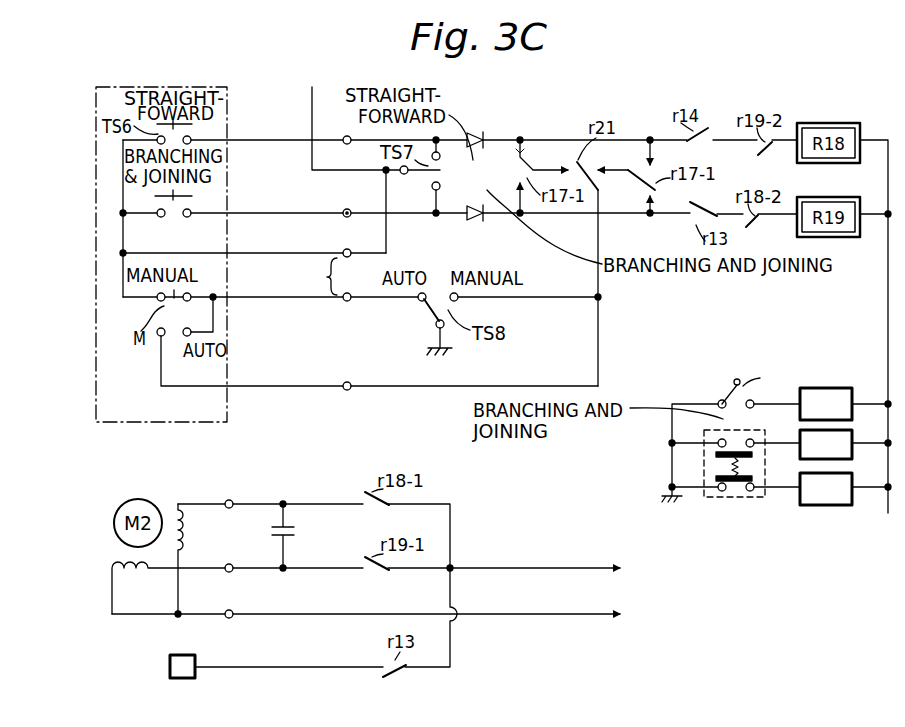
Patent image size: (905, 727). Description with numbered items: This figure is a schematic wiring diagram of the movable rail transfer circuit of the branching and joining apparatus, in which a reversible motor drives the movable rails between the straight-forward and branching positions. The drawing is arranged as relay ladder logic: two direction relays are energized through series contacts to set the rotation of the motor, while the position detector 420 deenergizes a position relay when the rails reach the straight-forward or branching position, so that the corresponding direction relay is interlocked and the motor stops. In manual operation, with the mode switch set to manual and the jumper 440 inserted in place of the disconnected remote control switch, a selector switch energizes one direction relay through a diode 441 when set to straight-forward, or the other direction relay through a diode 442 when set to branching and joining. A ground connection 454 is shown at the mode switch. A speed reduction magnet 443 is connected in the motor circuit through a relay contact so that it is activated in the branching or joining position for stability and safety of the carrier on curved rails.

The diode 441 is at (462, 134).
The diode 442 is at (470, 222).
The jumper 440 is at (327, 277).
The speed reduction magnet 443 is at (228, 407).
The ground 454 is at (448, 353).
The position detector 420 is at (682, 426).